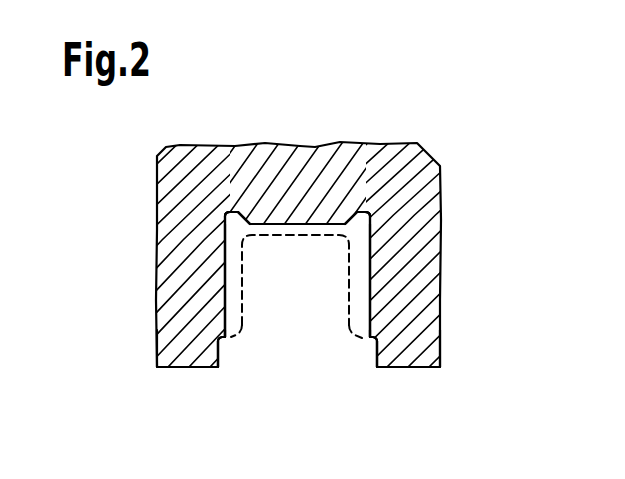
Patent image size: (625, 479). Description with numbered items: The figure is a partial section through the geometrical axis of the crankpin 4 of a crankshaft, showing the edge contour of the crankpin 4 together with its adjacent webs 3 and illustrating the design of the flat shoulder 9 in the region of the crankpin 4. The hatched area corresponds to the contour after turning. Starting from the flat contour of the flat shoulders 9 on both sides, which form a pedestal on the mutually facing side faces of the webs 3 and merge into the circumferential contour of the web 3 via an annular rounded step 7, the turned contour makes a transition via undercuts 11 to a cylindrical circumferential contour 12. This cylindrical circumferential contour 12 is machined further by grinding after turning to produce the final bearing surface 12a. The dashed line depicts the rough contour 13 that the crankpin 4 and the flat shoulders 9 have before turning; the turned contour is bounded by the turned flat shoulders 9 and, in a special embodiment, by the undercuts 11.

The web 3 is at (175, 349).
The crankpin 4 is at (262, 163).
The annular rounded step 7 is at (228, 340).
The flat shoulder 9 is at (223, 285).
The undercut 11 is at (238, 214).
The cylindrical circumferential contour 12 is at (321, 237).
The final bearing surface 12a is at (288, 225).
The rough contour 13 is at (347, 307).